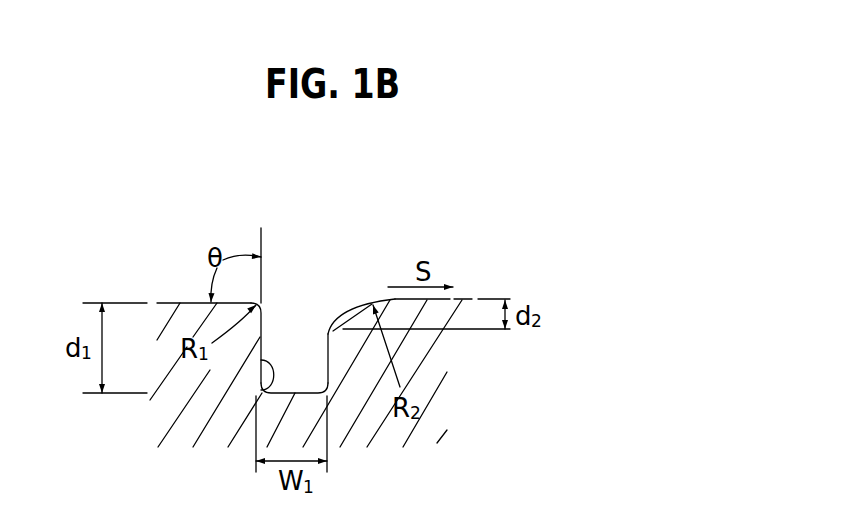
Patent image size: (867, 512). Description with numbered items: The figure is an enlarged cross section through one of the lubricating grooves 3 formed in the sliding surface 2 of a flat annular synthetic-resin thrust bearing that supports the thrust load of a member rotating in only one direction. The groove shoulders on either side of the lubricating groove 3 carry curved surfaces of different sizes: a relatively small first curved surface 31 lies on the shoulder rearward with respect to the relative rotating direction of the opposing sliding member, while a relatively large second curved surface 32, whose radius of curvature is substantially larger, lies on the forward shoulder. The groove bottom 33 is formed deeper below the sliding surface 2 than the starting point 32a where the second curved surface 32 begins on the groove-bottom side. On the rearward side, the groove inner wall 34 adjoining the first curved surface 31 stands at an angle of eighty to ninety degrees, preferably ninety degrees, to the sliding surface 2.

The sliding surface 2 is at (197, 303).
The lubricating groove 3 is at (305, 296).
The first curved surface 31 is at (258, 318).
The second curved surface 32 is at (362, 307).
The starting point 32a is at (329, 330).
The groove bottom 33 is at (290, 393).
The groove inner wall 34 is at (259, 392).